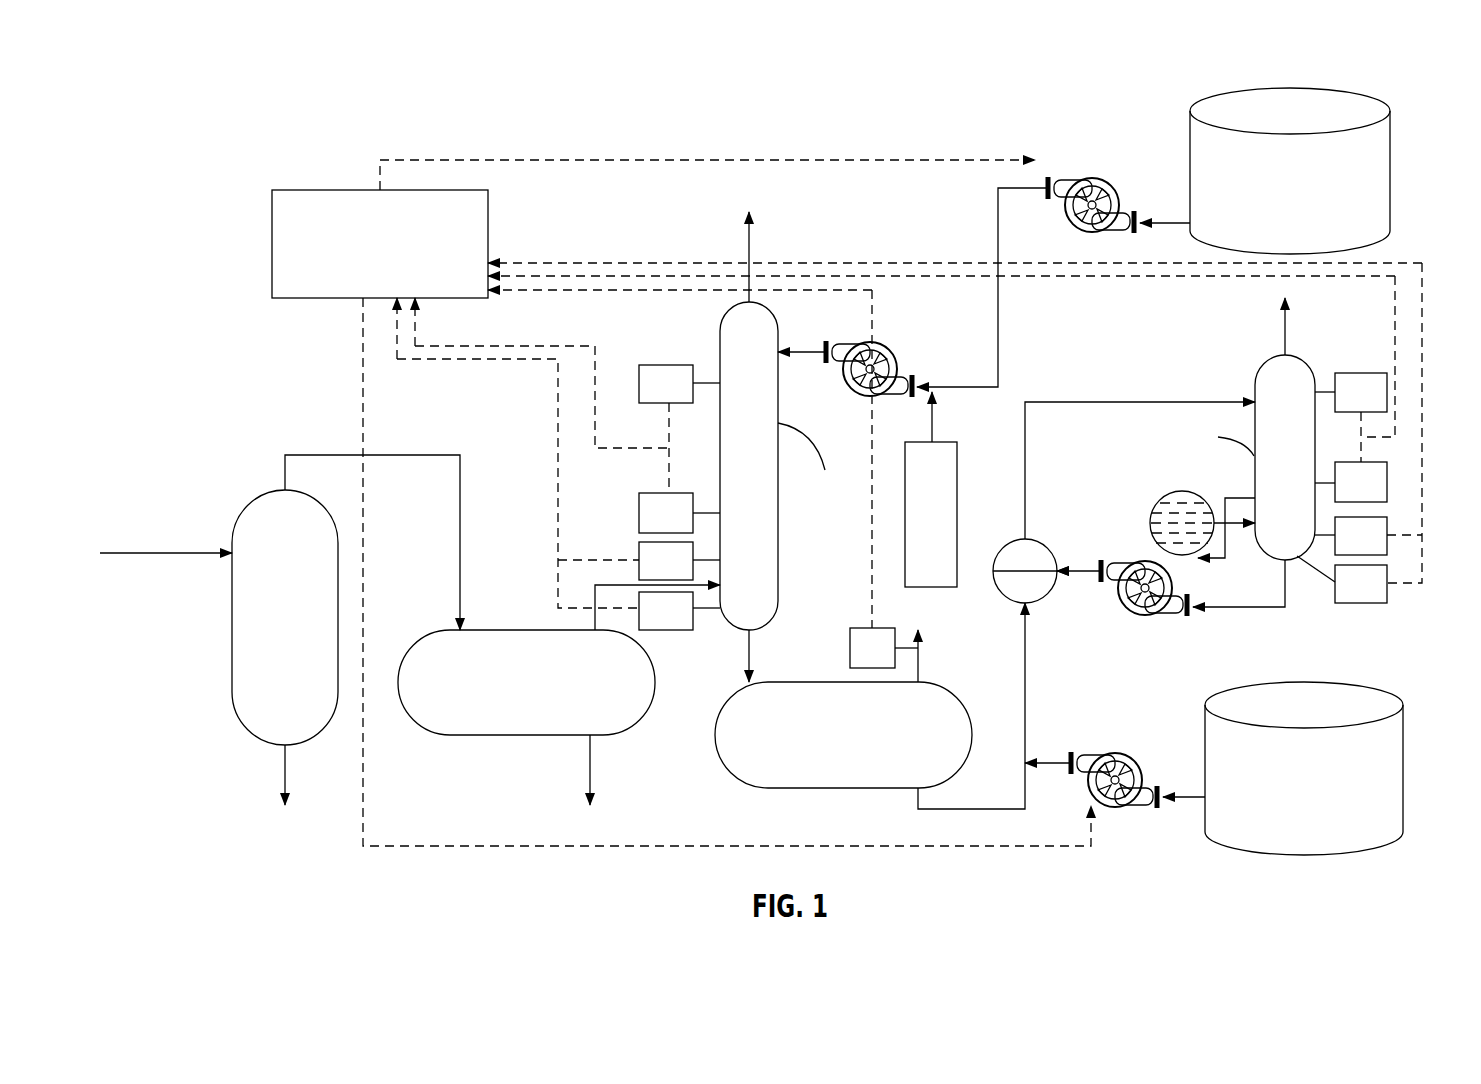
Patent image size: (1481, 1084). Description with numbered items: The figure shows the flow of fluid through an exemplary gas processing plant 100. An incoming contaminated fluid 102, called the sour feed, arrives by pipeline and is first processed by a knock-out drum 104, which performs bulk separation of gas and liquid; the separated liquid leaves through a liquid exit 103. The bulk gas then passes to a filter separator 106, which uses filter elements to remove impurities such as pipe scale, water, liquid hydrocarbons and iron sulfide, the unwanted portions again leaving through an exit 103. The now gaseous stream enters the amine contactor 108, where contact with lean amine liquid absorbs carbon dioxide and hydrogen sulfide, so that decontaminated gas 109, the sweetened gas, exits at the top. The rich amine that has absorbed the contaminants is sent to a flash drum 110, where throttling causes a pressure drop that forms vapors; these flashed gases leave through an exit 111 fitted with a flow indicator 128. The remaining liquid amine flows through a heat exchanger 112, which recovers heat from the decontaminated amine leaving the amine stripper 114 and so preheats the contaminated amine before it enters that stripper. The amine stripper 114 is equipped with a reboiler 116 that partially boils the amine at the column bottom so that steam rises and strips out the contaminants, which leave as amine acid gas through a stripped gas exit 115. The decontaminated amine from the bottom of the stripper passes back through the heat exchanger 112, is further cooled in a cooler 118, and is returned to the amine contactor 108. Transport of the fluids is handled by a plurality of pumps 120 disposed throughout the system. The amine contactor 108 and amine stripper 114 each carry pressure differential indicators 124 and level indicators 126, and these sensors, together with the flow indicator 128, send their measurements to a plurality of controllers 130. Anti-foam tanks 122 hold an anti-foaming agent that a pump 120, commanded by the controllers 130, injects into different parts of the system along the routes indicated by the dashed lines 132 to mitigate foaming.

The gas processing plant 100 is at (638, 126).
The incoming contaminated fluid 102 is at (170, 550).
The liquid exit 103 is at (283, 780).
The knock-out drum 104 is at (230, 642).
The filter separator 106 is at (472, 742).
The amine contactor 108 is at (728, 312).
The decontaminated gas 109 is at (746, 252).
The flash drum 110 is at (782, 790).
The flash gas stream 111 is at (920, 670).
The heat exchanger 112 is at (1044, 586).
The amine stripper 114 is at (1258, 372).
The stripped gas exit 115 is at (1283, 338).
The reboiler 116 is at (1166, 497).
The cooler 118 is at (951, 527).
The pump 120 is at (1095, 178).
The anti-foam tank 122 is at (1392, 188).
The pressure differential indicator 124 is at (676, 363).
The level indicator 126 is at (672, 630).
The flow indicator 128 is at (862, 627).
The controllers 130 is at (272, 238).
The dashed line 132 is at (453, 158).